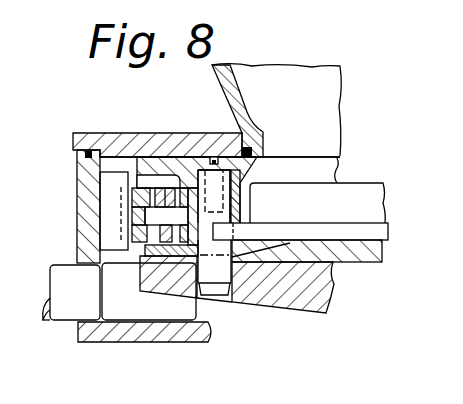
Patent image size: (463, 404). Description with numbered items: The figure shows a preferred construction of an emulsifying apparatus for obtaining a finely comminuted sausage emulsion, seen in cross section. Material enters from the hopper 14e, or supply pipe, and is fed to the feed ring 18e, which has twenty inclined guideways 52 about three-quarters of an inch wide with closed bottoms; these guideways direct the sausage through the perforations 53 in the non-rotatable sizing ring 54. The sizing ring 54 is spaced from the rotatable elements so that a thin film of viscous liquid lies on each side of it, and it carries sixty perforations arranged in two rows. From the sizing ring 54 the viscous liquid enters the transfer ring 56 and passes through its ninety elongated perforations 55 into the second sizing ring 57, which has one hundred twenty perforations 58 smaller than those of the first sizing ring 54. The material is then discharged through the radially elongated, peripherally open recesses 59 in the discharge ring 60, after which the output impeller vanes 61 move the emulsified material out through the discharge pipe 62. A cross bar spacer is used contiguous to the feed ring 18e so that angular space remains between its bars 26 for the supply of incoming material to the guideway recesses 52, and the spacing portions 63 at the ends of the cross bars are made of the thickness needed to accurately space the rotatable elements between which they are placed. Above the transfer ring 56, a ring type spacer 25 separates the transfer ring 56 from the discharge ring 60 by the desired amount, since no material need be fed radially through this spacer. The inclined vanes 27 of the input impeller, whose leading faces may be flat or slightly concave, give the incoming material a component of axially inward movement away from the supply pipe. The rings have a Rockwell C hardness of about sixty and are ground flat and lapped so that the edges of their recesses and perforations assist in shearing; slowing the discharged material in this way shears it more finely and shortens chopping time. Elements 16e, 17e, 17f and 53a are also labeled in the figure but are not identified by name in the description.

The hopper 14e is at (288, 101).
The support member 16e is at (315, 313).
The shaft lower portion 17e is at (215, 270).
The shaft upper portion 17f is at (207, 170).
The feed ring 18e is at (355, 255).
The ring type spacer 25 is at (250, 190).
The bars 26 is at (365, 236).
The inclined vanes 27 is at (340, 195).
The inclined guideways 52 is at (173, 268).
The perforations 53 is at (153, 237).
The bracket 53a is at (115, 172).
The sizing ring 54 is at (123, 232).
The perforations 55 is at (147, 220).
The transfer ring 56 is at (162, 215).
The second sizing ring 57 is at (177, 200).
The smaller perforations 58 is at (140, 199).
The recesses 59 is at (150, 182).
The discharge ring 60 is at (160, 165).
The output impeller vanes 61 is at (120, 310).
The discharge pipe 62 is at (68, 313).
The spacing portions 63 is at (245, 233).